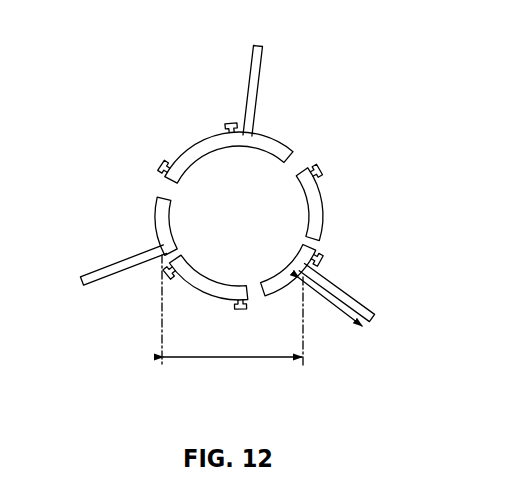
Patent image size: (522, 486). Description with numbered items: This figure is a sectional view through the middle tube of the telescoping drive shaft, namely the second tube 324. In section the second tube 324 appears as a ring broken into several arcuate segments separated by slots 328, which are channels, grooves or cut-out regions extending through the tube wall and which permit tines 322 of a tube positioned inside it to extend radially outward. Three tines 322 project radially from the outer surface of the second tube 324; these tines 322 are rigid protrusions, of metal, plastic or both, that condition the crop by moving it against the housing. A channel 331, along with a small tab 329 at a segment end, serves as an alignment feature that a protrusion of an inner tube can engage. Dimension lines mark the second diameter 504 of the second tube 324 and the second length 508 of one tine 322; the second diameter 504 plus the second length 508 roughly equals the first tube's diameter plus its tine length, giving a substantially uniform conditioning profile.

The second tube 324 is at (128, 60).
The tines 322 is at (253, 90).
The slots 328 is at (165, 188).
The tab 329 is at (237, 312).
The channel 331 is at (167, 260).
The second diameter 504 is at (243, 358).
The second length 508 is at (356, 318).